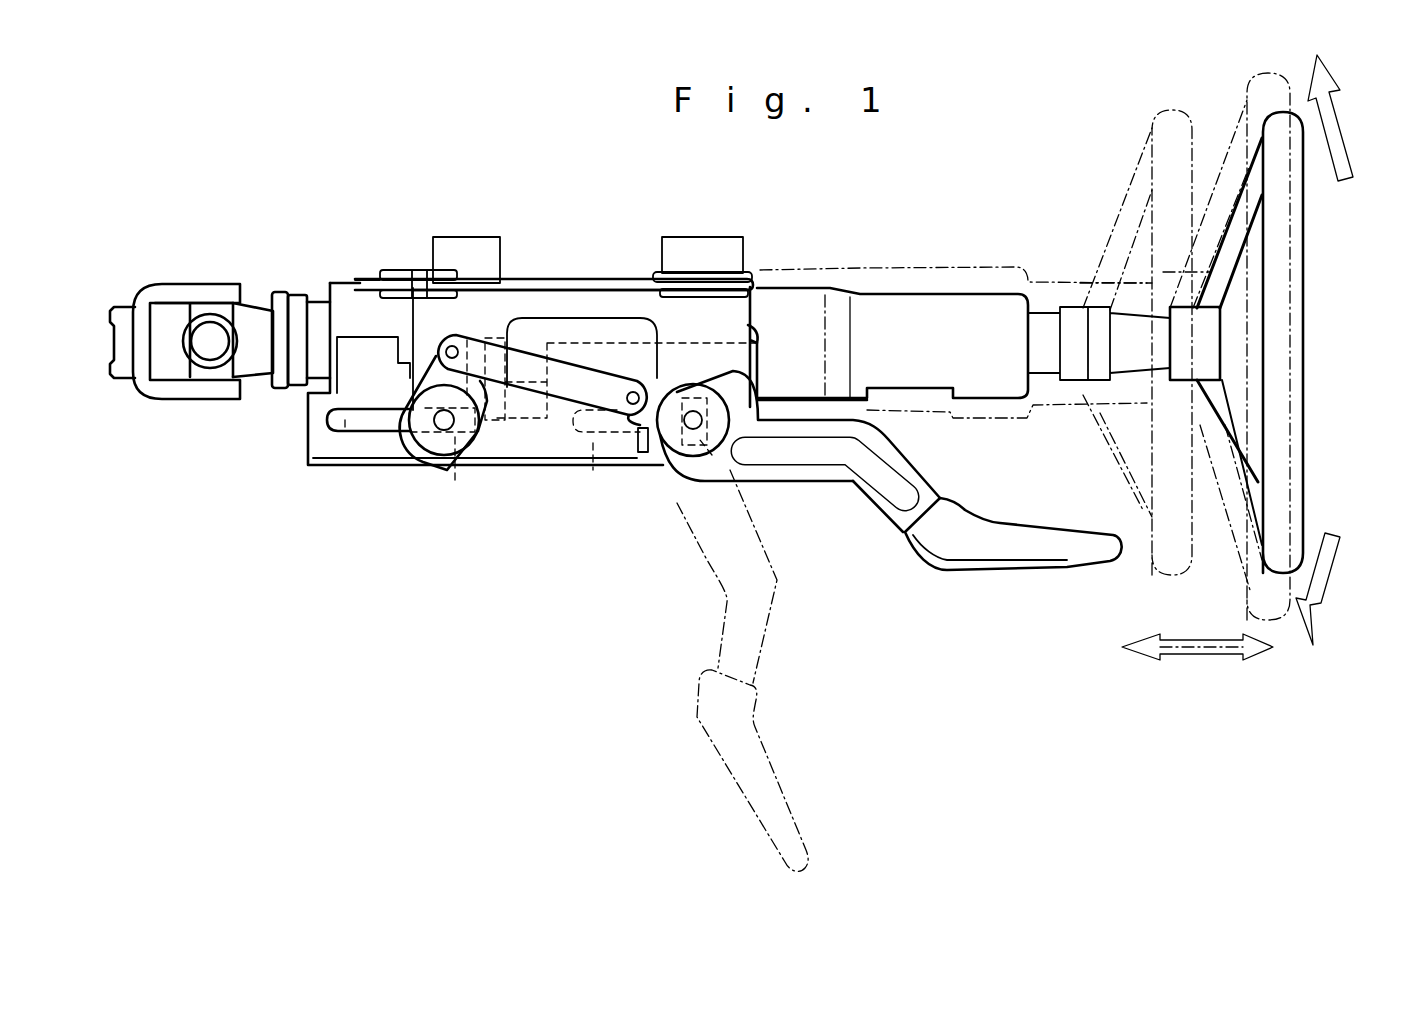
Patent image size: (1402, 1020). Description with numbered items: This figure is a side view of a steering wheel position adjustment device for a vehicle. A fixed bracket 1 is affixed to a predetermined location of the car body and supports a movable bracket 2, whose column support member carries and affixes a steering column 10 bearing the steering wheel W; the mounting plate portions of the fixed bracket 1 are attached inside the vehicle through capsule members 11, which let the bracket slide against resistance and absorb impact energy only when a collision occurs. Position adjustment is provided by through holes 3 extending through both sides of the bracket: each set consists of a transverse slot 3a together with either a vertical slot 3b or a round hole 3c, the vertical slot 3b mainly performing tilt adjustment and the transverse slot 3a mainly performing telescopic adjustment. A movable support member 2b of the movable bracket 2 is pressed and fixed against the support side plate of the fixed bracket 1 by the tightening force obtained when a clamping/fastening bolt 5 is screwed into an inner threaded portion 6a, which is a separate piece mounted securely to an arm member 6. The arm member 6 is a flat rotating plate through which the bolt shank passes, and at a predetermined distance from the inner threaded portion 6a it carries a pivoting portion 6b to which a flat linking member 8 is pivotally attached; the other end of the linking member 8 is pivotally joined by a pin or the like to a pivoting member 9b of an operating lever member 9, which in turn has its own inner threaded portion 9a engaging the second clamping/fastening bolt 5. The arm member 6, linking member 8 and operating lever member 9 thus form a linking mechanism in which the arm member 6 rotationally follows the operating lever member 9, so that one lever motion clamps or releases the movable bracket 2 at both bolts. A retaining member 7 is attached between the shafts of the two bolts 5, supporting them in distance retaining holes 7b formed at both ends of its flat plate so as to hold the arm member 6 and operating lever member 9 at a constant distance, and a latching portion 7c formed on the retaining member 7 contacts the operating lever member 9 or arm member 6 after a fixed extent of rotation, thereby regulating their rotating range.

The fixed bracket 1 is at (587, 282).
The movable bracket 2 is at (375, 446).
The movable support member 2b is at (325, 434).
The through holes 3 is at (424, 420).
The transverse slot 3a is at (343, 425).
The vertical slot 3b is at (748, 462).
The round hole 3c is at (499, 422).
The clamping/fastening bolt 5 is at (445, 432).
The arm member 6 is at (426, 352).
The inner threaded portion 6a is at (466, 432).
The pivoting portion 6b is at (456, 349).
The retaining member 7 is at (567, 440).
The distance retaining hole 7b is at (455, 480).
The latching portion 7c is at (645, 460).
The linking member 8 is at (588, 380).
The operating lever member 9 is at (910, 470).
The inner threaded portion 9a is at (740, 405).
The pivoting member 9b is at (638, 393).
The steering column 10 is at (922, 323).
The capsule member 11 is at (400, 272).
The steering wheel w is at (1243, 95).